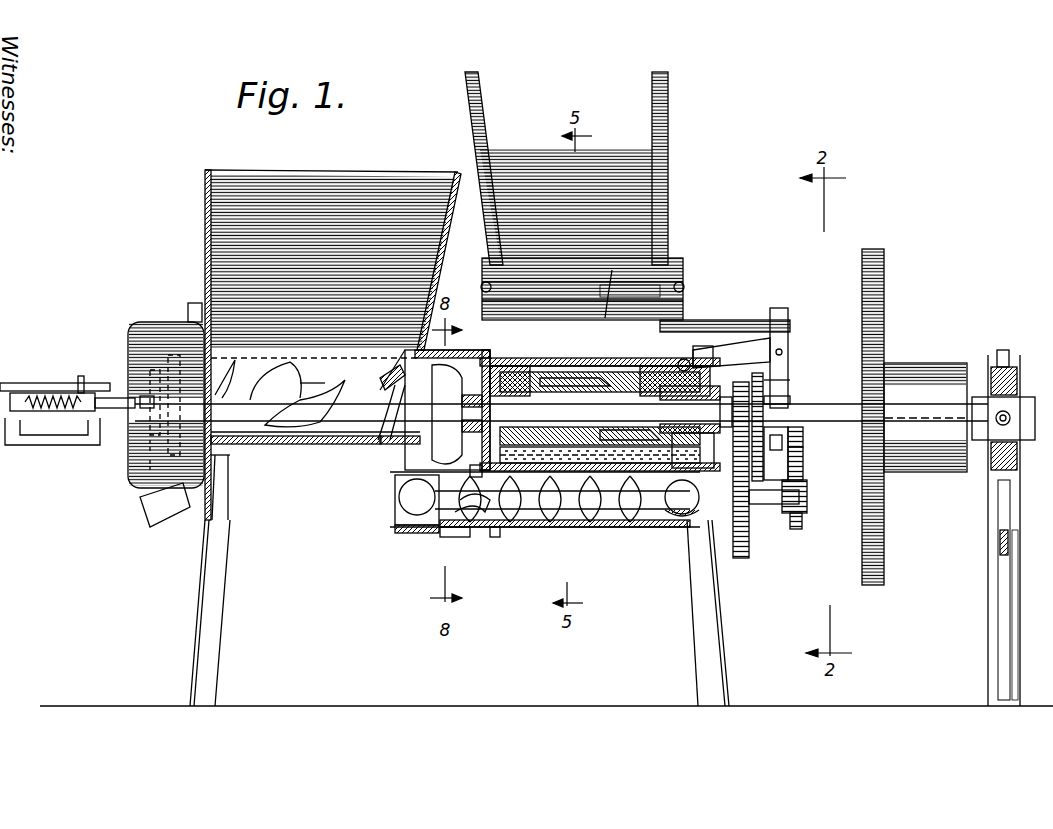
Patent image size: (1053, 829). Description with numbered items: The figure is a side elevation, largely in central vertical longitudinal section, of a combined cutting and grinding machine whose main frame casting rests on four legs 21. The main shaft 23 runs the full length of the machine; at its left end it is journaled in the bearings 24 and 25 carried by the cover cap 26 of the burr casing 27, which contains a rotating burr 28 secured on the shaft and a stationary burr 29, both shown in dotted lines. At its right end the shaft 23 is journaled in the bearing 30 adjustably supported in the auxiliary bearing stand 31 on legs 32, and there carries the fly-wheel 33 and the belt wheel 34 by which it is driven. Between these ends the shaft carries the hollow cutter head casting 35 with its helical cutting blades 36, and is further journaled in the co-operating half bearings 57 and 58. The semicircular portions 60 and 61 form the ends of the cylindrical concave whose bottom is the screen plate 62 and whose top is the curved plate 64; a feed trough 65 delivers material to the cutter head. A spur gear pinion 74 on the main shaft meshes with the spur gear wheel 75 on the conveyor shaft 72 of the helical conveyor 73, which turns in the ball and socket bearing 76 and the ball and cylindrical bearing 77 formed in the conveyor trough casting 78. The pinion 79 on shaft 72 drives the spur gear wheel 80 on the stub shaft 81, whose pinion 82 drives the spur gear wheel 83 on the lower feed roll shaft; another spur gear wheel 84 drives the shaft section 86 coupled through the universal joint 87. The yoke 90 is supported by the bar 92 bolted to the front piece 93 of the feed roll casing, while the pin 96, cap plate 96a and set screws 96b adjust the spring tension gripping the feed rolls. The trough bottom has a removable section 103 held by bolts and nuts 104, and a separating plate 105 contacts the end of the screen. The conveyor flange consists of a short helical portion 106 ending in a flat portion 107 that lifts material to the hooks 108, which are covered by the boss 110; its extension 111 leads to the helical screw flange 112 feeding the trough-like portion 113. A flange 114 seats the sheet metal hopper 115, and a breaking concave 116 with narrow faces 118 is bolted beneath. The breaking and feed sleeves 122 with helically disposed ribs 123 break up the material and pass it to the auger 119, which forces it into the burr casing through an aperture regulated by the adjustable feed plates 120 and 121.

The legs 21 is at (226, 596).
The main shaft 23 is at (838, 410).
The bearing 24 is at (14, 384).
The bearing 25 is at (96, 394).
The cover cap 26 is at (130, 348).
The burr casing 27 is at (186, 325).
The rotating burr 28 is at (128, 452).
The stationary burr 29 is at (128, 470).
The bearing 30 is at (600, 432).
The auxiliary bearing stand 31 is at (995, 460).
The legs 32 is at (988, 618).
The fly-wheel 33 is at (880, 290).
The belt wheel 34 is at (934, 366).
The cutter head casting 35 is at (600, 409).
The helical cutting blades 36 is at (563, 362).
The half bearing 57 is at (693, 450).
The half bearing 58 is at (680, 395).
The semicircular portions 60 is at (656, 362).
The semicircular portions 61 is at (600, 396).
The screen plate 62 is at (600, 423).
The curved plate 64 is at (520, 362).
The feed trough 65 is at (566, 168).
The conveyor shaft 72 is at (773, 512).
The helical conveyor 73 is at (560, 530).
The spur gear pinion 74 is at (746, 418).
The spur gear wheel 75 is at (741, 558).
The ball and socket bearing 76 is at (680, 518).
The ball and cylindrical bearing 77 is at (400, 508).
The conveyor trough casting 78 is at (600, 530).
The spur gear pinion 79 is at (807, 500).
The spur gear wheel 80 is at (804, 432).
The stub shaft 81 is at (804, 468).
The spur gear pinion 82 is at (804, 450).
The spur gear wheel 83 is at (770, 386).
The spur gear wheel 84 is at (772, 400).
The shaft section 86 is at (726, 340).
The universal joint 87 is at (700, 346).
The yoke 90 is at (779, 312).
The bar 92 is at (740, 343).
The front piece 93 is at (612, 279).
The pin 96 is at (484, 282).
The cap plate 96a is at (485, 290).
The set screws 96b is at (630, 292).
The removable section 103 is at (455, 537).
The bolts and nuts 104 is at (428, 414).
The separating plate 105 is at (463, 465).
The short helical portion 106 is at (496, 537).
The flat portion 107 is at (418, 533).
The hooks 108 is at (484, 413).
The boss 110 is at (448, 358).
The extension 111 is at (385, 376).
The helical screw flange 112 is at (402, 372).
The trough-like portion 113 is at (372, 445).
The flange 114 is at (410, 350).
The sheet metal hopper 115 is at (458, 173).
The breaking concave 116 is at (300, 444).
The narrow faces 118 is at (328, 444).
The auger 119 is at (222, 392).
The adjustable feed plate 120 is at (215, 360).
The adjustable feed plate 121 is at (210, 470).
The breaking and feed sleeves 122 is at (275, 400).
The helically disposed ribs 123 is at (310, 385).